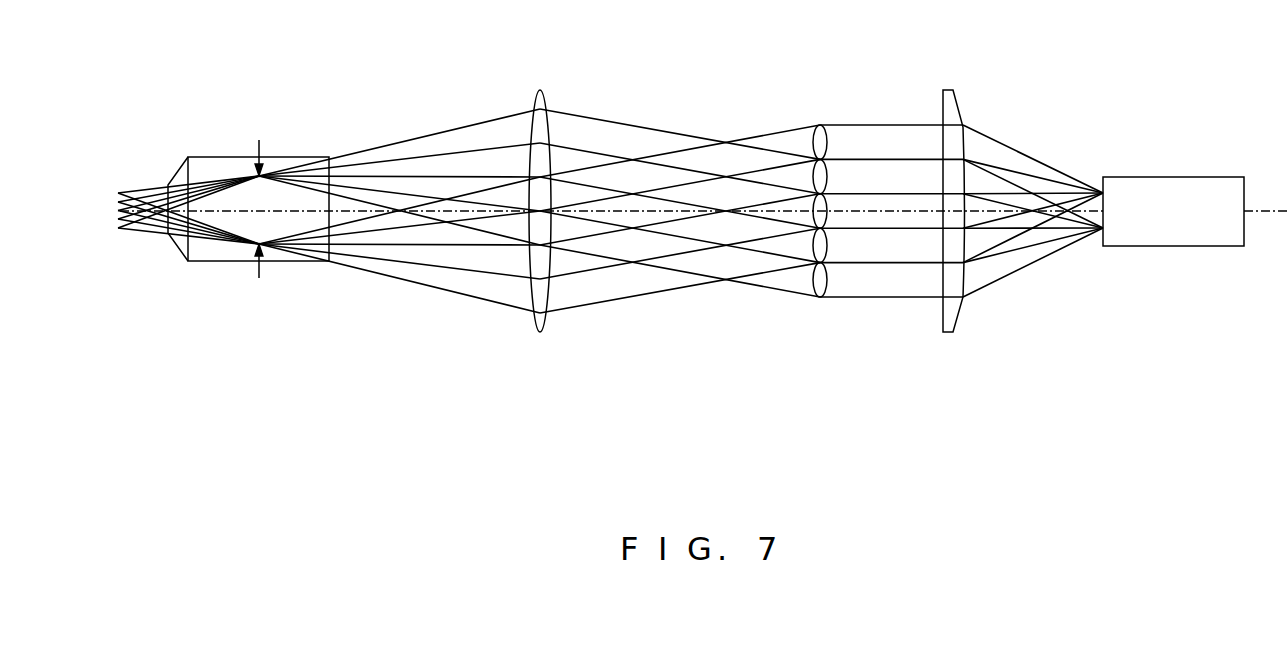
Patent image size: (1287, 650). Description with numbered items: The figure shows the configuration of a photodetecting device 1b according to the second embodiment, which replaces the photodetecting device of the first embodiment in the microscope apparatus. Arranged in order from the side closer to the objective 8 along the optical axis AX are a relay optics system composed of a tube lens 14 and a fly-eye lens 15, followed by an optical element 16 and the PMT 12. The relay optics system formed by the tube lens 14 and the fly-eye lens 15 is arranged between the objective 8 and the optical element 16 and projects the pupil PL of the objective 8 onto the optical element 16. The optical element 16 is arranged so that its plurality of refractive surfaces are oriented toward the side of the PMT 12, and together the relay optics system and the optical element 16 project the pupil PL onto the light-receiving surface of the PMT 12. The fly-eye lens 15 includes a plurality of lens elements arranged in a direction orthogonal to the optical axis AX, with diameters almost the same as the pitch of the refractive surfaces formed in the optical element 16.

The objective 8 is at (299, 122).
The pupil PL is at (258, 140).
The tube lens 14 is at (541, 90).
The fly-eye lens 15 is at (820, 125).
The optical element 16 is at (948, 90).
The PMT 12 is at (1123, 177).
The optical axis AX is at (883, 211).
The photodetecting device 1b is at (1203, 28).